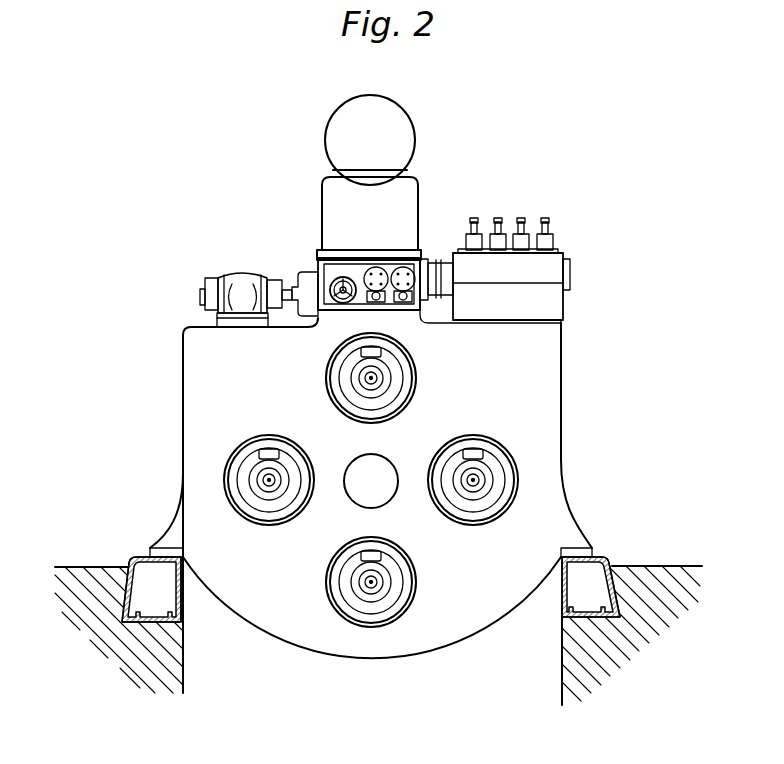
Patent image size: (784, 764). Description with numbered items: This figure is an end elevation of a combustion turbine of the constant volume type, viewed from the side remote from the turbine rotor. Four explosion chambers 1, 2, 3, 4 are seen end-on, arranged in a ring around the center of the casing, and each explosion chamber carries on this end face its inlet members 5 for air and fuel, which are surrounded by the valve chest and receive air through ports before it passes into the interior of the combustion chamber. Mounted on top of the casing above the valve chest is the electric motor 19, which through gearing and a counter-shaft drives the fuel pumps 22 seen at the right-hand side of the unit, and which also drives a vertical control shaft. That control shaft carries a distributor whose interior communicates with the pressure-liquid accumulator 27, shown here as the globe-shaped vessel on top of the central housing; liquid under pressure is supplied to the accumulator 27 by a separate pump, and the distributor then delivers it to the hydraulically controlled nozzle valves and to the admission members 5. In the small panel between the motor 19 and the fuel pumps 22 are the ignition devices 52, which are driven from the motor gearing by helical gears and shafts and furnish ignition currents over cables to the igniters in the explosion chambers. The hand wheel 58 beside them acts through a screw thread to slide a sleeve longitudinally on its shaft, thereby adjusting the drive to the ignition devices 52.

The explosion chamber 1 is at (416, 379).
The explosion chamber 2 is at (512, 470).
The explosion chamber 3 is at (385, 621).
The explosion chamber 4 is at (237, 475).
The inlet members 5 is at (377, 394).
The electric motor 19 is at (237, 283).
The fuel pumps 22 is at (470, 243).
The pressure-liquid accumulator 27 is at (401, 131).
The ignition devices 52 is at (377, 300).
The hand wheel 58 is at (340, 306).